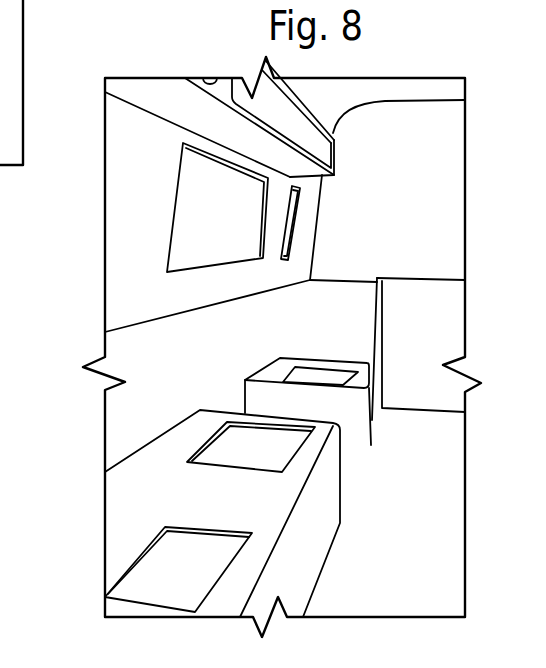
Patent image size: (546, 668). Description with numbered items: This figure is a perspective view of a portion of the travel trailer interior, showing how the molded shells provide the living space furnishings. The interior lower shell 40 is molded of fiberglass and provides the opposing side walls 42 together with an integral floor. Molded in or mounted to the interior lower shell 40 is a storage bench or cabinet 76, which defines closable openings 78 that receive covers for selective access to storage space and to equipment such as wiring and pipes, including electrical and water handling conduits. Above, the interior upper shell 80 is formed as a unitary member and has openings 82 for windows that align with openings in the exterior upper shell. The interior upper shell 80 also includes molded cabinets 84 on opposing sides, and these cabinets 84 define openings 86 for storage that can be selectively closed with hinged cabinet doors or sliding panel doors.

The interior lower shell 40 is at (130, 433).
The side walls 42 is at (241, 328).
The cabinets 76 is at (298, 542).
The closable openings 78 is at (240, 453).
The interior upper shell 80 is at (418, 322).
The openings for windows 82 is at (287, 218).
The cabinets 84 is at (318, 175).
The openings 86 is at (303, 140).